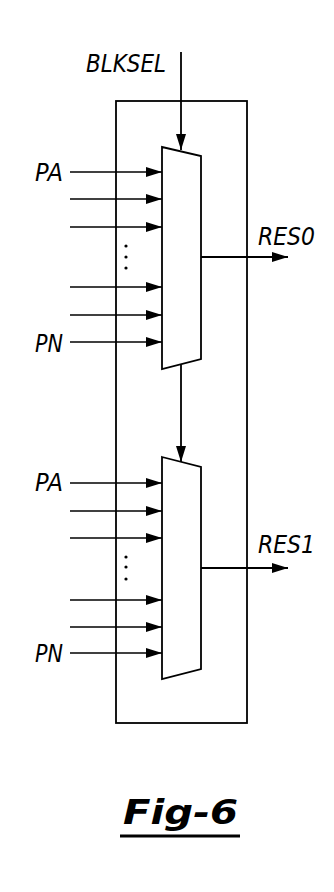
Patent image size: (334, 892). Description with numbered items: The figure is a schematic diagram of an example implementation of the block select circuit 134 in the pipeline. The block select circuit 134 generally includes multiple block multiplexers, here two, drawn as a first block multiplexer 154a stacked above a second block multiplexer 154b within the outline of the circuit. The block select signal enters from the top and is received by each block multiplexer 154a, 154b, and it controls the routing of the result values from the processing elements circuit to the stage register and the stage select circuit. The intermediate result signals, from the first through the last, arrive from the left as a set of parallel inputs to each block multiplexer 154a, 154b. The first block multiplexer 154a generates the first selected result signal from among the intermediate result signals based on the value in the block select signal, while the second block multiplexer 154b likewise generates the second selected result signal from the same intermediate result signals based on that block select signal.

The block select circuit 134 is at (217, 101).
The first block multiplexer 154a is at (201, 173).
The second block multiplexer 154b is at (201, 484).